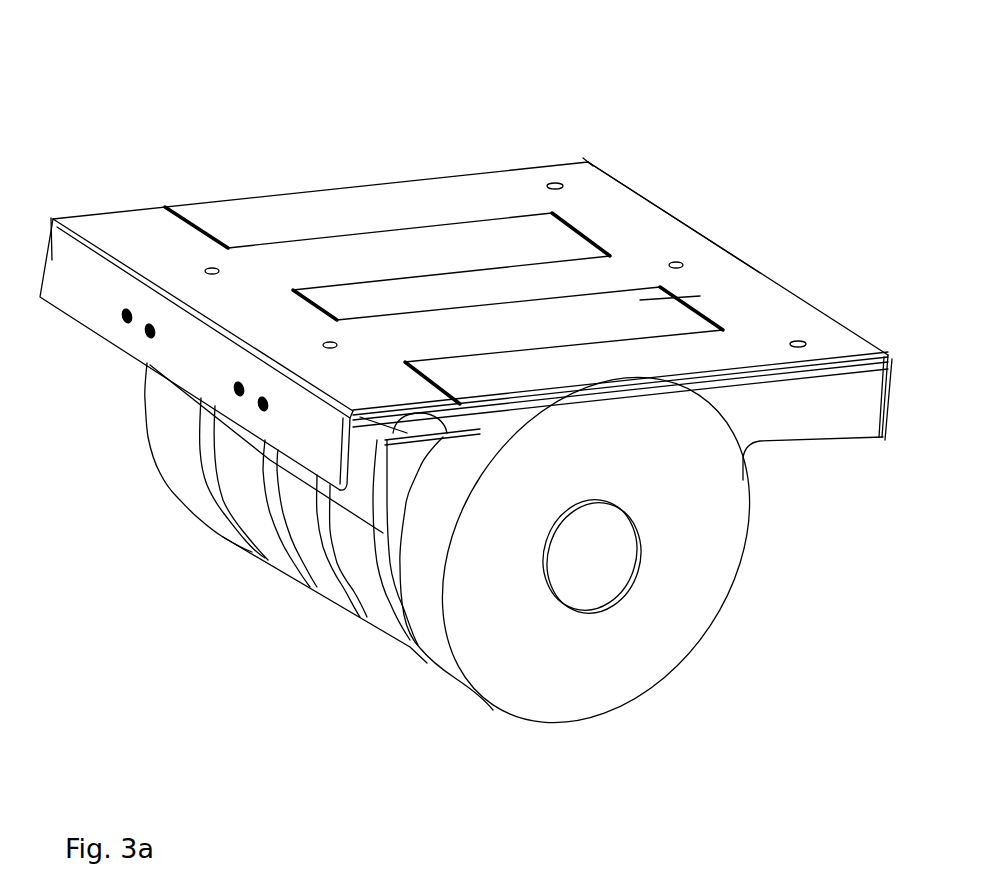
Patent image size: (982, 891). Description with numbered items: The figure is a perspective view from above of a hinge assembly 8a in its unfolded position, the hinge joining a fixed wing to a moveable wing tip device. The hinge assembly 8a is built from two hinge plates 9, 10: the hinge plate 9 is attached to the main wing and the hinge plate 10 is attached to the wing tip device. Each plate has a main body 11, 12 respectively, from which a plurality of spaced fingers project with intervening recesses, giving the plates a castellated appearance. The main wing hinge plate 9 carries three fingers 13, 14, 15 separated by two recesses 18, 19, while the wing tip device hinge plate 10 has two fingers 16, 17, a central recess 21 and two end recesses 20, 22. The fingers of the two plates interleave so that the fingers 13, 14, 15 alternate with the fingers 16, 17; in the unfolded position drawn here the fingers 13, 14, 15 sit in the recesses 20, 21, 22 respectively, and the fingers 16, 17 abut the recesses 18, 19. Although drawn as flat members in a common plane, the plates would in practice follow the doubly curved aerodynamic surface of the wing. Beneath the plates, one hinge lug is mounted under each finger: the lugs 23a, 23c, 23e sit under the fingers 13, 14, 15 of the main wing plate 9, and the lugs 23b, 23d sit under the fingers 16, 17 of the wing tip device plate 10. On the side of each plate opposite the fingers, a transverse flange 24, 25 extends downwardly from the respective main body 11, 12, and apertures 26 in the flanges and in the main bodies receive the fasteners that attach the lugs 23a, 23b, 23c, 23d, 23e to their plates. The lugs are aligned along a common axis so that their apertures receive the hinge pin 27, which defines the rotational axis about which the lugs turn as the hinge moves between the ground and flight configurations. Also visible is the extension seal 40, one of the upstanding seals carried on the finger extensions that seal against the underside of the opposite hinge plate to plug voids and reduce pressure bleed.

The hinge assembly 8a is at (230, 110).
The hinge plate 9 is at (416, 156).
The hinge plate 10 is at (136, 186).
The main body 11 is at (646, 212).
The main body 12 is at (117, 228).
The finger 13 is at (438, 186).
The finger 14 is at (570, 278).
The finger 15 is at (680, 357).
The finger 16 is at (357, 253).
The finger 17 is at (530, 333).
The recess 18 is at (578, 262).
The recess 19 is at (683, 307).
The recess 20 is at (190, 214).
The central recess 21 is at (211, 275).
The recess 22 is at (440, 398).
The hinge lug 23a is at (193, 511).
The hinge lug 23b is at (260, 552).
The hinge lug 23c is at (320, 590).
The hinge lug 23d is at (363, 617).
The hinge lug 23e is at (430, 662).
The transverse flange 24 is at (880, 430).
The transverse flange 25 is at (51, 218).
The apertures 26 is at (554, 180).
The hinge pin 27 is at (617, 568).
The extension seal 40 is at (419, 442).